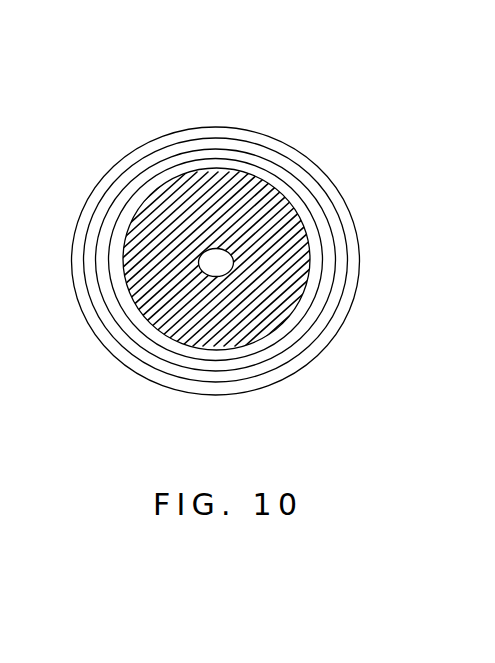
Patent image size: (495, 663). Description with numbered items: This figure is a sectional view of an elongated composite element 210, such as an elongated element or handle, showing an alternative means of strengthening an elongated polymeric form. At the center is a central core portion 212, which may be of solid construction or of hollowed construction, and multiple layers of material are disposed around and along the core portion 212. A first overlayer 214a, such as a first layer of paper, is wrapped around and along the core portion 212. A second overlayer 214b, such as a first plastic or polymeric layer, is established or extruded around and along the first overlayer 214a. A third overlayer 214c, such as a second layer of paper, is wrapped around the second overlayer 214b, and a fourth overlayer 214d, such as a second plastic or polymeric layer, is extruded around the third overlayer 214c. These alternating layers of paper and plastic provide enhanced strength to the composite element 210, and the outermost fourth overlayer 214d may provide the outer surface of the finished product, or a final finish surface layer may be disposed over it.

The elongated composite element 210 is at (211, 94).
The central core portion 212 is at (250, 217).
The first overlayer 214a is at (315, 243).
The second overlayer 214b is at (303, 330).
The third overlayer 214c is at (207, 373).
The fourth overlayer 214d is at (105, 335).